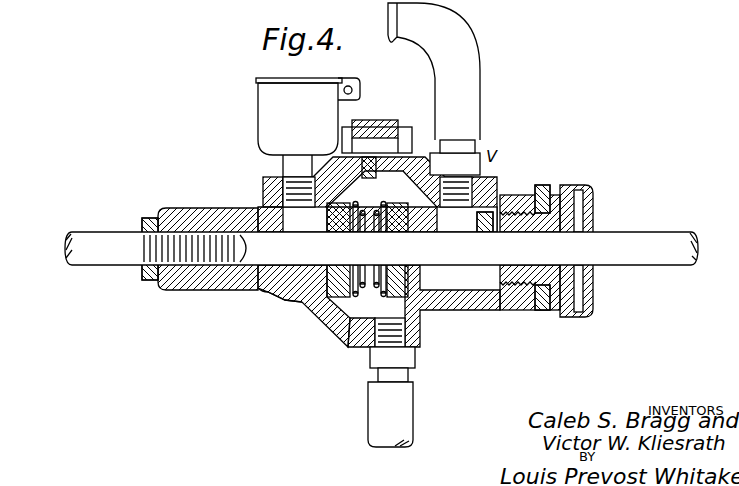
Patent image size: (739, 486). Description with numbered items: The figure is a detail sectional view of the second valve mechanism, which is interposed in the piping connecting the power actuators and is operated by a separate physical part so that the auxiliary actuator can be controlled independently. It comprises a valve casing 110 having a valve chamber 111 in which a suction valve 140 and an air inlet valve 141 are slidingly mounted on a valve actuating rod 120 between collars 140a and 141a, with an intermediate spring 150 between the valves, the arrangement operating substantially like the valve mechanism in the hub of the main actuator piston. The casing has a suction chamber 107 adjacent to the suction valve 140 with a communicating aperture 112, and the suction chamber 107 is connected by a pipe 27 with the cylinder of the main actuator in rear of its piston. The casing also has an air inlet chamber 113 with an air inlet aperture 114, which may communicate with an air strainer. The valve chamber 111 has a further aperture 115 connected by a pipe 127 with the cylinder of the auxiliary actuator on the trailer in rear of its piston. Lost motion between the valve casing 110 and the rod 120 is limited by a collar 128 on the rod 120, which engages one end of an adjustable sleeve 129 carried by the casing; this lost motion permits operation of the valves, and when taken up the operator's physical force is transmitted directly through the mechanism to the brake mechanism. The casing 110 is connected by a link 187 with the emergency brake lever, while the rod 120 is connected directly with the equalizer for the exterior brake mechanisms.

The pipe 27 is at (470, 63).
The suction chamber 107 is at (461, 222).
The valve casing 110 is at (318, 300).
The valve chamber 111 is at (367, 310).
The communicating aperture 112 is at (480, 203).
The air inlet chamber 113 is at (292, 218).
The air inlet aperture 114 is at (276, 176).
The aperture 115 is at (380, 336).
The valve actuating rod 120 is at (648, 240).
The pipe 127 is at (408, 407).
The collar 128 is at (503, 193).
The adjustable sleeve 129 is at (533, 311).
The suction valve 140 is at (423, 314).
The collar 140a is at (413, 272).
The air inlet valve 141 is at (293, 300).
The collar 141a is at (268, 292).
The intermediate spring 150 is at (352, 322).
The link 187 is at (98, 257).